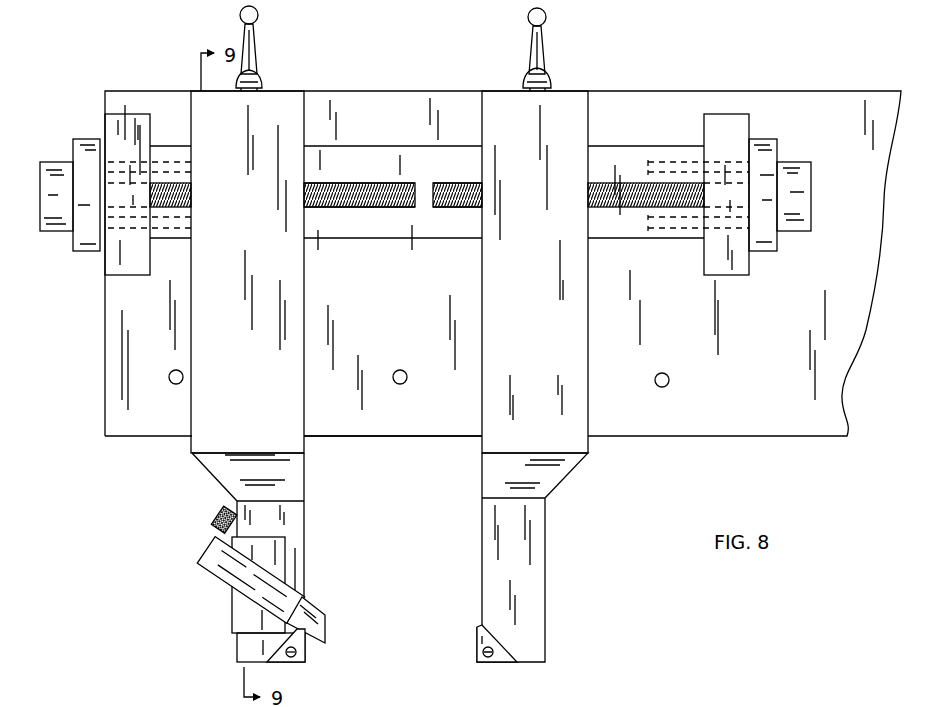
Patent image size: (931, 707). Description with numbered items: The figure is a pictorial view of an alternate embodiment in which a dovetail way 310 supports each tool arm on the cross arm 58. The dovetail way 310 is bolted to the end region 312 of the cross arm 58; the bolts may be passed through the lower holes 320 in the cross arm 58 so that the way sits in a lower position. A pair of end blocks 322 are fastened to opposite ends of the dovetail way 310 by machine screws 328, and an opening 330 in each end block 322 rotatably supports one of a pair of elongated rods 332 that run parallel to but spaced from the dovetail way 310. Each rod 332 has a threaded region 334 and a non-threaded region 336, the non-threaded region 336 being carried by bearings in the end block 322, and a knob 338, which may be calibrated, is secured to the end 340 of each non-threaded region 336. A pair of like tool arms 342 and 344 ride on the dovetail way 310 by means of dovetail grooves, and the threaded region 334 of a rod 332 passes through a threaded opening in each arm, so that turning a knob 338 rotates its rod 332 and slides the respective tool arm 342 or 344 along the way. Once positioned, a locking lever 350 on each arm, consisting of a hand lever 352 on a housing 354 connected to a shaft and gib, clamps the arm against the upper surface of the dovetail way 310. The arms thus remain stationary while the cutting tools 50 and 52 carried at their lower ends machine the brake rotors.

The cross arm 58 is at (705, 436).
The tool arm 342 is at (263, 220).
The tool arm 344 is at (550, 363).
The dovetail way 310 is at (392, 146).
The end region 312 is at (377, 437).
The lower holes 320 is at (176, 370).
The end blocks 322 is at (118, 114).
The machine screws 328 is at (170, 162).
The opening 330 is at (133, 205).
The elongated rods 332 is at (340, 207).
The threaded region 334 is at (332, 183).
The non-threaded region 336 is at (130, 183).
The knob 338 is at (57, 162).
The end 340 is at (100, 195).
The locking lever 350 is at (255, 60).
The hand lever 352 is at (245, 33).
The housing 354 is at (262, 78).
The cutting tools 50 is at (477, 657).
The cutting tools 52 is at (297, 663).